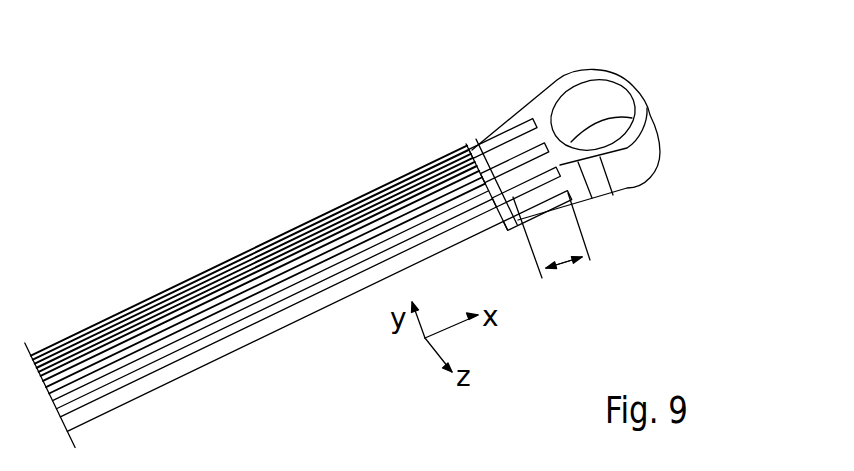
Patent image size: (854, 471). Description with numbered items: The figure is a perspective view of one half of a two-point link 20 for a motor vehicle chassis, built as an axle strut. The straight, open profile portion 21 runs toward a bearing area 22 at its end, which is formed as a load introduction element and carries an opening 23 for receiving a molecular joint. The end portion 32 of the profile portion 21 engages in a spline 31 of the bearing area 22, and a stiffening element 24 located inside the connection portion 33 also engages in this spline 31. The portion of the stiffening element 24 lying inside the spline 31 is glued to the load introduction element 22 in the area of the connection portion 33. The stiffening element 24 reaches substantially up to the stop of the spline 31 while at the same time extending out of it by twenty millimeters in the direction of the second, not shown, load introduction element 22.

The two-point link 20 is at (232, 167).
The profile portion 21 is at (142, 304).
The bearing area 22 is at (638, 80).
The opening 23 is at (608, 118).
The stiffening element 24 is at (473, 150).
The spline 31 is at (498, 122).
The end portion 32 is at (565, 263).
The connection portion 33 is at (567, 300).